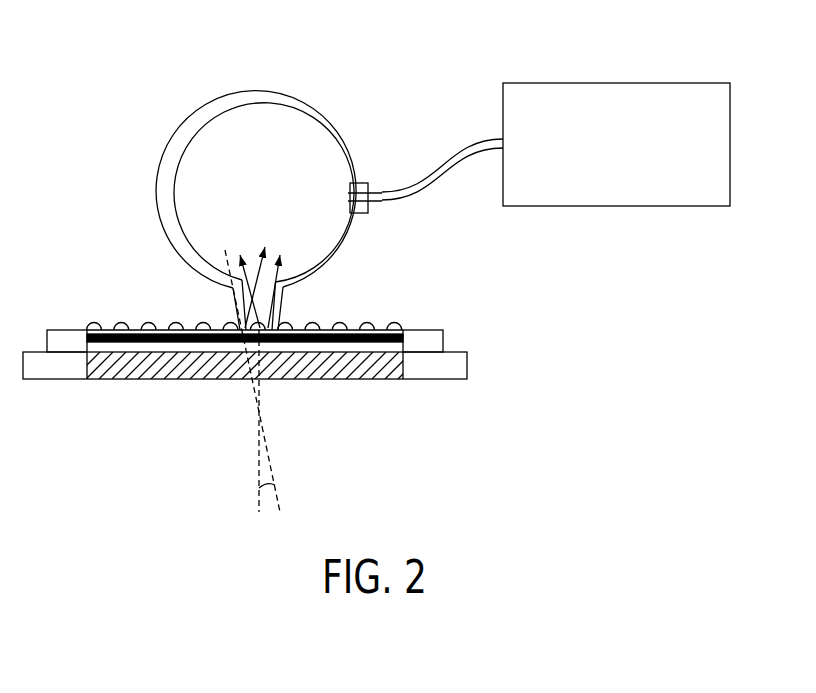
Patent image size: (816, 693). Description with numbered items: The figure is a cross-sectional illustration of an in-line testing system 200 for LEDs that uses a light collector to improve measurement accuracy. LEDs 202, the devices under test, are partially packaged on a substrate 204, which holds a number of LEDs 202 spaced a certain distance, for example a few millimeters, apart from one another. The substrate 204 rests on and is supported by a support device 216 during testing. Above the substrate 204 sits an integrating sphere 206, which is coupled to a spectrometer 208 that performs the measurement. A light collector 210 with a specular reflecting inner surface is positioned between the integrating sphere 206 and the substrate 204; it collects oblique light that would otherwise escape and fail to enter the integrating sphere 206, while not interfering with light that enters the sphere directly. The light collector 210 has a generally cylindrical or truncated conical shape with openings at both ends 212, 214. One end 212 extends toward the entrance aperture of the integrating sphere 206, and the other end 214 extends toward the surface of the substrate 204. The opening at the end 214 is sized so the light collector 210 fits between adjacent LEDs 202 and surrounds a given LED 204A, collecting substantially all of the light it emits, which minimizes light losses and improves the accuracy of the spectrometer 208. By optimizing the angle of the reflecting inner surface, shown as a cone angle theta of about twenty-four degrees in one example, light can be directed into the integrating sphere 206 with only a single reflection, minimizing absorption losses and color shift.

The in-line testing system 200 is at (157, 109).
The LEDs 202 is at (118, 322).
The substrate 204 is at (287, 363).
The given LED 204A is at (262, 333).
The integrating sphere 206 is at (307, 107).
The spectrometer 208 is at (617, 83).
The light collector 210 is at (283, 301).
The end of the light collector 212 is at (228, 300).
The end of the light collector 214 is at (236, 322).
The support device 216 is at (447, 380).